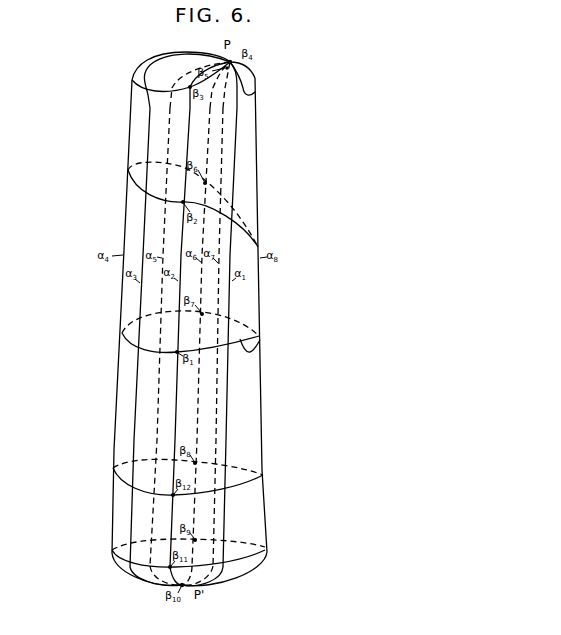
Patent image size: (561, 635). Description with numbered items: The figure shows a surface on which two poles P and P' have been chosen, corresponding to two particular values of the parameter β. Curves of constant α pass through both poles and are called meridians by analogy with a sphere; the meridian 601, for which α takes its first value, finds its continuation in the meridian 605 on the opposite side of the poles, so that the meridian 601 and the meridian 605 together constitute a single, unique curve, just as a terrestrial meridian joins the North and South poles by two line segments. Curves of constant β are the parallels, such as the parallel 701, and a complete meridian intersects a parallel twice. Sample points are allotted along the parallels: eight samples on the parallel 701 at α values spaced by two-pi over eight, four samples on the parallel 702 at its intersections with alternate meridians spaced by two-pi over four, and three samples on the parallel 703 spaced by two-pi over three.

The meridian 601 is at (228, 427).
The meridian 605 is at (158, 388).
The parallel 701 is at (260, 340).
The parallel 702 is at (255, 92).
The parallel 703 is at (250, 542).